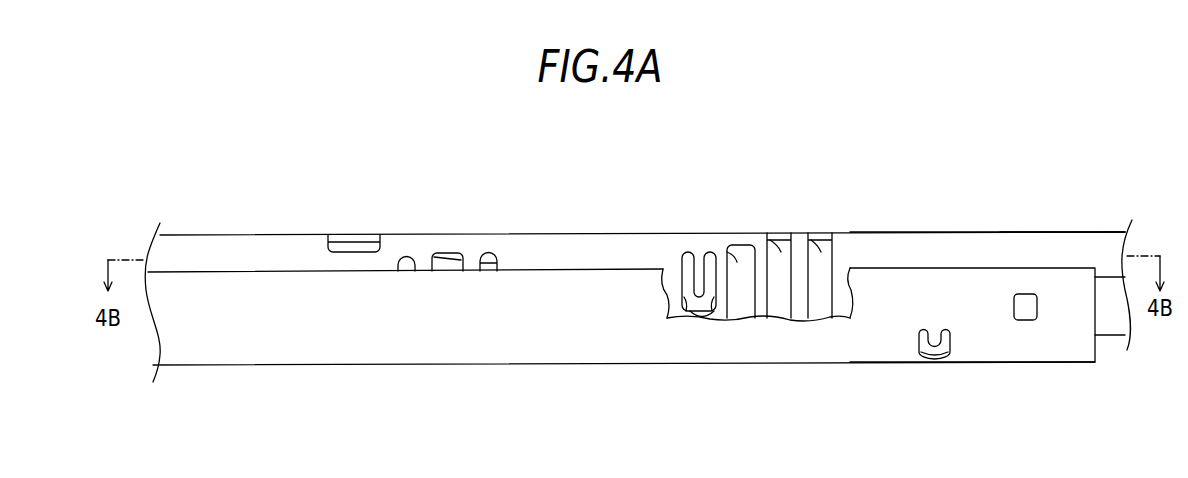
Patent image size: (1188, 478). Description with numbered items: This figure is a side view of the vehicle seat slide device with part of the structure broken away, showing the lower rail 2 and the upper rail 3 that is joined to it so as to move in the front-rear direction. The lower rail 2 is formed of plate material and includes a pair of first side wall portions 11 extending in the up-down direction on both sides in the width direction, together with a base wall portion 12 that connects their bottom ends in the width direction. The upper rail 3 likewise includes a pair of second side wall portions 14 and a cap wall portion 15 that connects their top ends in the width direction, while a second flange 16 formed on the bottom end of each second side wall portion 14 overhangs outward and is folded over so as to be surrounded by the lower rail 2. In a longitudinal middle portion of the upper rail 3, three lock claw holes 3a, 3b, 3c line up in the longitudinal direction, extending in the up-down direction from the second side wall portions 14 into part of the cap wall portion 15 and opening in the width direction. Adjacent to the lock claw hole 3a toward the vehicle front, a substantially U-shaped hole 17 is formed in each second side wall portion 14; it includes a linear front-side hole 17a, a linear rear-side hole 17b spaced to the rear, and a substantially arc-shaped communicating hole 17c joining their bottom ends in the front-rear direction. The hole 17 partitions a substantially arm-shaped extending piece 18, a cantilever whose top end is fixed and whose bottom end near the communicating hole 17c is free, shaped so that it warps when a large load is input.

The lower rail 2 is at (482, 373).
The upper rail 3 is at (506, 226).
The lock claw hole 3a is at (737, 252).
The lock claw hole 3b is at (782, 252).
The lock claw hole 3c is at (818, 252).
The first side wall portion 11 is at (968, 352).
The base wall portion 12 is at (1022, 367).
The second side wall portion 14 is at (935, 247).
The cap wall portion 15 is at (1010, 231).
The second flange 16 is at (1112, 325).
The hole 17 is at (702, 335).
The front-side hole 17a is at (685, 310).
The rear-side hole 17b is at (716, 313).
The communicating hole 17c is at (688, 312).
The extending piece 18 is at (683, 260).